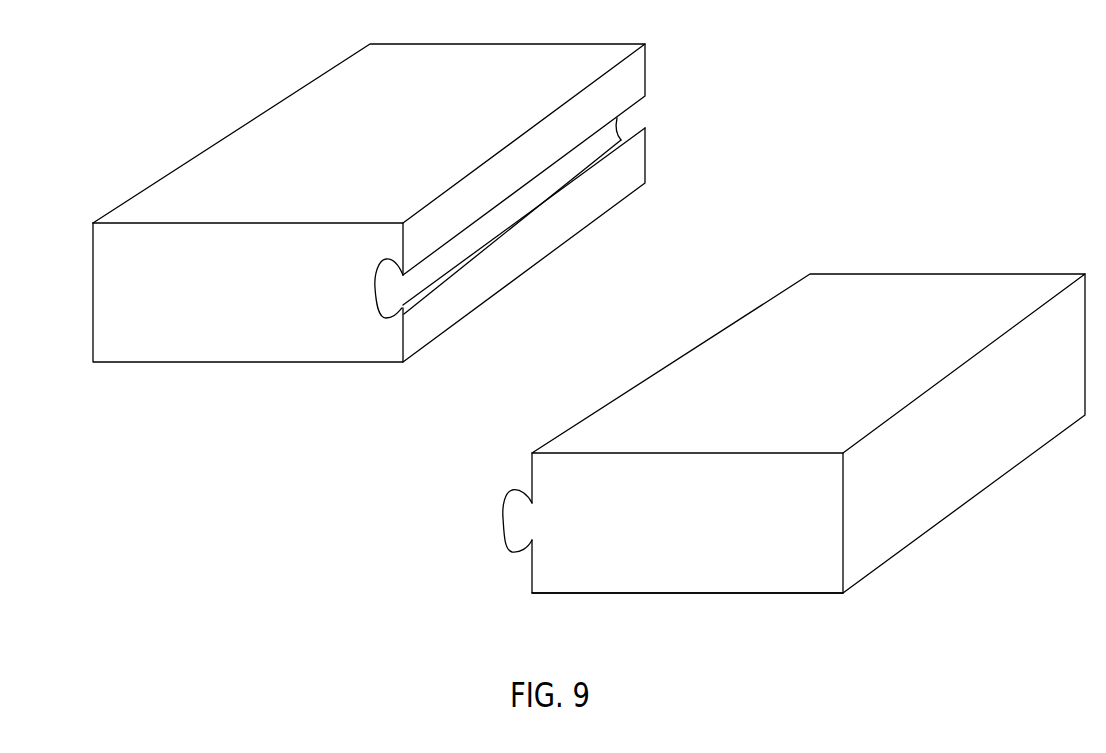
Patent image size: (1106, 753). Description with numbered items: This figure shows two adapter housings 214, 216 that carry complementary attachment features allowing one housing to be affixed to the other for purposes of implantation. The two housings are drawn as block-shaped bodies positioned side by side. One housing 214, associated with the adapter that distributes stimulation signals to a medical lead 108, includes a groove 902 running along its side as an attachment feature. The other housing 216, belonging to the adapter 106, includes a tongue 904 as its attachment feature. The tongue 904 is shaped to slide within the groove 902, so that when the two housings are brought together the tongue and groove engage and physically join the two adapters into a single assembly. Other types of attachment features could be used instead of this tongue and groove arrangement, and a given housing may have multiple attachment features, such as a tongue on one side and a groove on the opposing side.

The medical lead 108 is at (369, 222).
The housing 214 is at (288, 108).
The groove 902 is at (375, 304).
The adapter 106 is at (752, 469).
The housing 216 is at (678, 575).
The tongue 904 is at (500, 528).